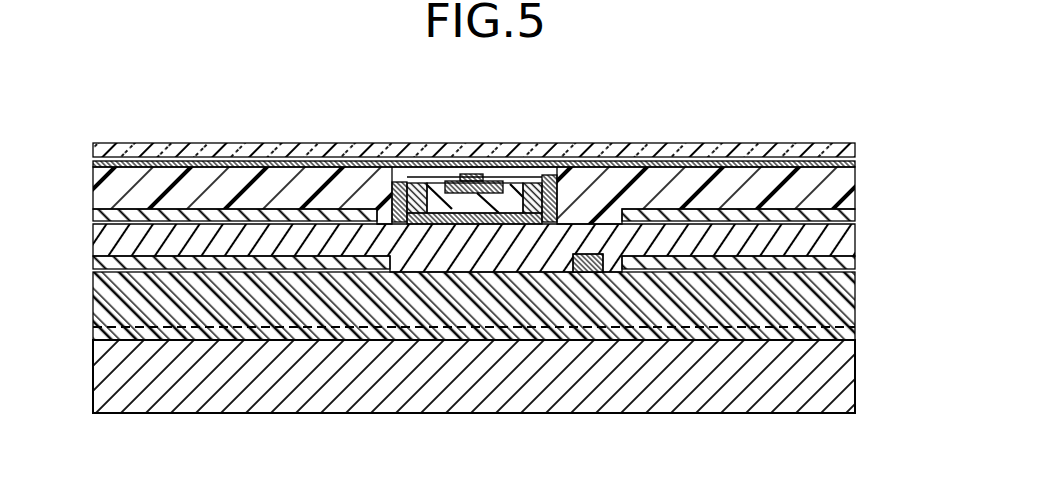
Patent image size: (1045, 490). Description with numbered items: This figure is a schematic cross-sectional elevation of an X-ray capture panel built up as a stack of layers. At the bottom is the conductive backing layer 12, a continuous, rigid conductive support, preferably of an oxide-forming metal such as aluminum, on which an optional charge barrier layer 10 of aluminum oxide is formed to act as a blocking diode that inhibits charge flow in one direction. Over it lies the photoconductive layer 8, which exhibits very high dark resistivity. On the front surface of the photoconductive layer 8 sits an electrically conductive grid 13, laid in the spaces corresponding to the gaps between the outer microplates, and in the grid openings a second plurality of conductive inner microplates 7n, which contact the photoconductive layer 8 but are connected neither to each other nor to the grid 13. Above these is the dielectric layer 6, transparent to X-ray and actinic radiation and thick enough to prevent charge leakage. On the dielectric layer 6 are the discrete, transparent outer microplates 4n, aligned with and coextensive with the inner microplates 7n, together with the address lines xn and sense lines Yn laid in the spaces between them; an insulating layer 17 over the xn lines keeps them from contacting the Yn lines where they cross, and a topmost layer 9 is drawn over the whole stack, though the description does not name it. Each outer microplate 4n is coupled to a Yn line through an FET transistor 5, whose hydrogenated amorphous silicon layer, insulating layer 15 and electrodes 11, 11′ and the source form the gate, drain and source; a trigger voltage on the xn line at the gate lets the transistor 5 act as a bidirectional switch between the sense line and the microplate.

The outer microplate 4n is at (845, 216).
The FET transistor 5 is at (483, 238).
The dielectric layer 6 is at (843, 245).
The inner microplate 7n is at (850, 263).
The photoconductive layer 8 is at (850, 300).
The upper substrate 9 is at (838, 152).
The charge barrier layer 10 is at (850, 334).
The gate electrode 11 is at (457, 183).
The drain electrode 11′ is at (556, 177).
The conductive backing layer 12 is at (850, 395).
The conductive grid 13 is at (592, 272).
The insulating layer 15 is at (513, 183).
The insulating layer 17 is at (834, 193).
The sense line Yn is at (857, 168).
The address line xn is at (472, 182).